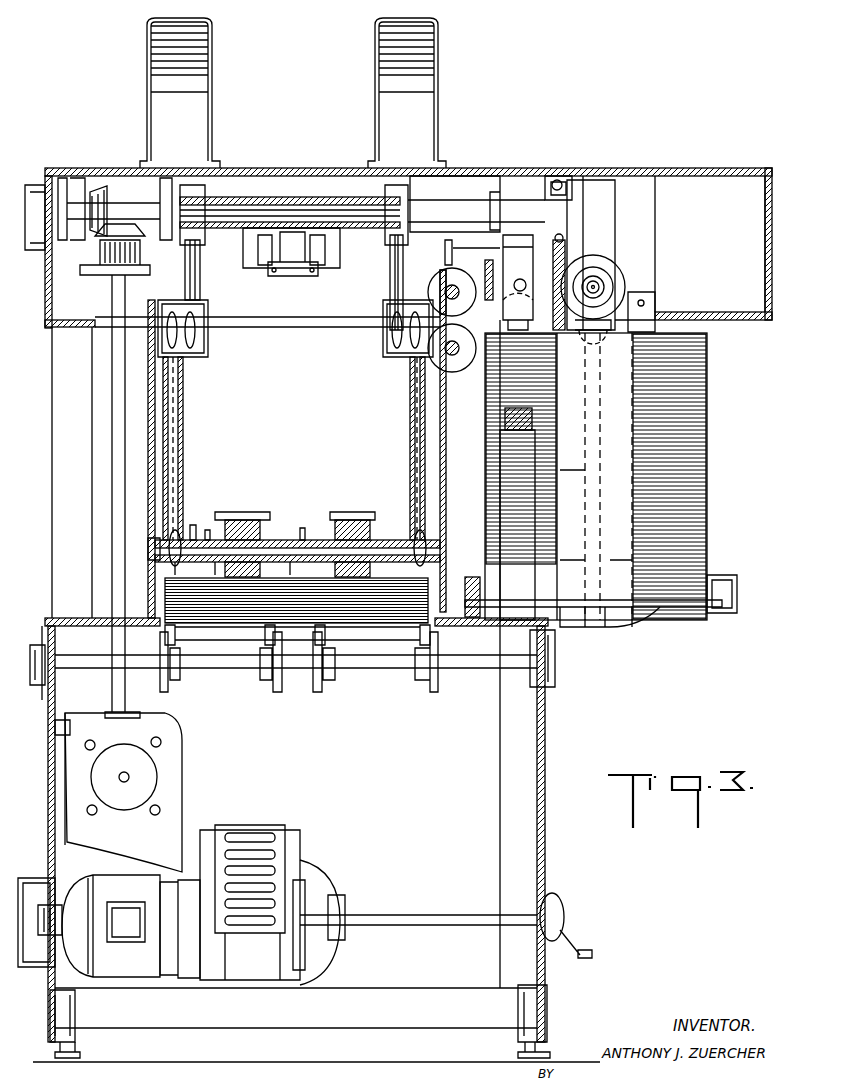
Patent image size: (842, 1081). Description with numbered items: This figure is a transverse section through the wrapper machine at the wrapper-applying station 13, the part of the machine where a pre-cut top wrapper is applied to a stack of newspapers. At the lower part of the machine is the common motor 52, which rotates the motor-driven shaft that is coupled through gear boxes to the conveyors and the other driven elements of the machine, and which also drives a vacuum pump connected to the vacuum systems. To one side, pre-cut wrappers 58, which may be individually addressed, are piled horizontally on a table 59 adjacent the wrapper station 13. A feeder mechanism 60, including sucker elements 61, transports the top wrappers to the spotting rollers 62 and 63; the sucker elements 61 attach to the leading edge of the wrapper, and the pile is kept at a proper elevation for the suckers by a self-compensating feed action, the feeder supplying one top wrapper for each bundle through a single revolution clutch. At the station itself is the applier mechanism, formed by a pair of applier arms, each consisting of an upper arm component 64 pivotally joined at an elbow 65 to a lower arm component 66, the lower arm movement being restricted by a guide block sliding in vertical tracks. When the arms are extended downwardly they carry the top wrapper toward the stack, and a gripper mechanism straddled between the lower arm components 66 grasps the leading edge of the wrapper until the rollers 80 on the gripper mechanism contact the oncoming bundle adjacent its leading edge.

The wrapper-applying station 13 is at (270, 404).
The common motor 52 is at (163, 758).
The pre-cut wrappers 58 is at (700, 508).
The table 59 is at (700, 607).
The feeder mechanism 60 is at (603, 192).
The sucker elements 61 is at (511, 300).
The spotting roller 62 is at (436, 277).
The spotting roller 63 is at (460, 364).
The upper arm component 64 is at (197, 278).
The elbow 65 is at (200, 336).
The lower arm component 66 is at (183, 410).
The rollers 80 is at (366, 570).